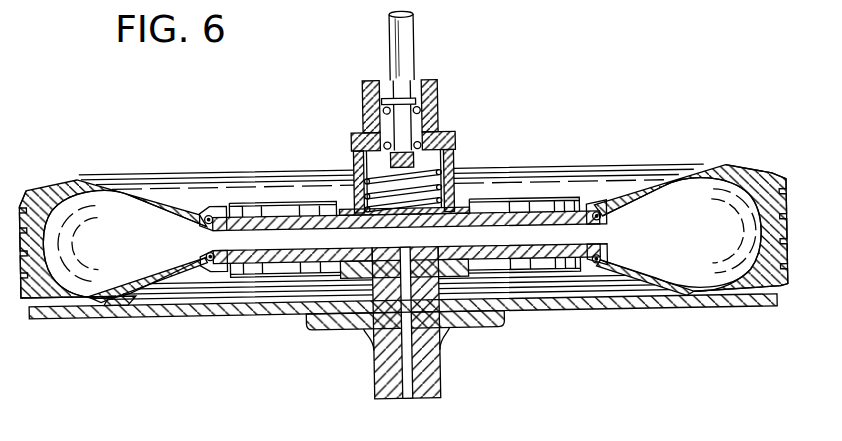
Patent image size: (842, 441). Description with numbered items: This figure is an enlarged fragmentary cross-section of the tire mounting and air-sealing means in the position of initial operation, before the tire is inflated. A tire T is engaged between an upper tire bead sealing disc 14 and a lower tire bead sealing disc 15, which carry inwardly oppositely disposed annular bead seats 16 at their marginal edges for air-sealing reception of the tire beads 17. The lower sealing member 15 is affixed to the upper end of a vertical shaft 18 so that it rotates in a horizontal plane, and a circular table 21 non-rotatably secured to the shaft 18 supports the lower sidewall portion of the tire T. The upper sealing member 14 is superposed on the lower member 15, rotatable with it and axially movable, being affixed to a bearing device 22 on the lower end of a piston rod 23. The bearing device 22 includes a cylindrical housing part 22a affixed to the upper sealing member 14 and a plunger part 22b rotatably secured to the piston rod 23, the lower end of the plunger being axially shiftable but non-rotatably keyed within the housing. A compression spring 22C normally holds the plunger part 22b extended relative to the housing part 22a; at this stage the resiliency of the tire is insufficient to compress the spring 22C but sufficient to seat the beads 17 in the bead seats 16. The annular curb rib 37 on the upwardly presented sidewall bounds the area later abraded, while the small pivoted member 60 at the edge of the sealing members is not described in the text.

The piston rod 23 is at (418, 45).
The plunger part 22b is at (430, 84).
The cylindrical housing part 22a is at (455, 136).
The bearing device 22 is at (457, 162).
The compression spring 22C is at (375, 172).
The annular curb rib 37 is at (78, 178).
The pivot bracket 60 is at (205, 212).
The tire bead 17 is at (205, 250).
The upper tire bead sealing disc 14 is at (590, 216).
The annular bead seat 16 is at (600, 258).
The tire T is at (750, 172).
The lower tire bead sealing disc 15 is at (578, 276).
The vertical shaft 18 is at (440, 380).
The circular table 21 is at (112, 313).